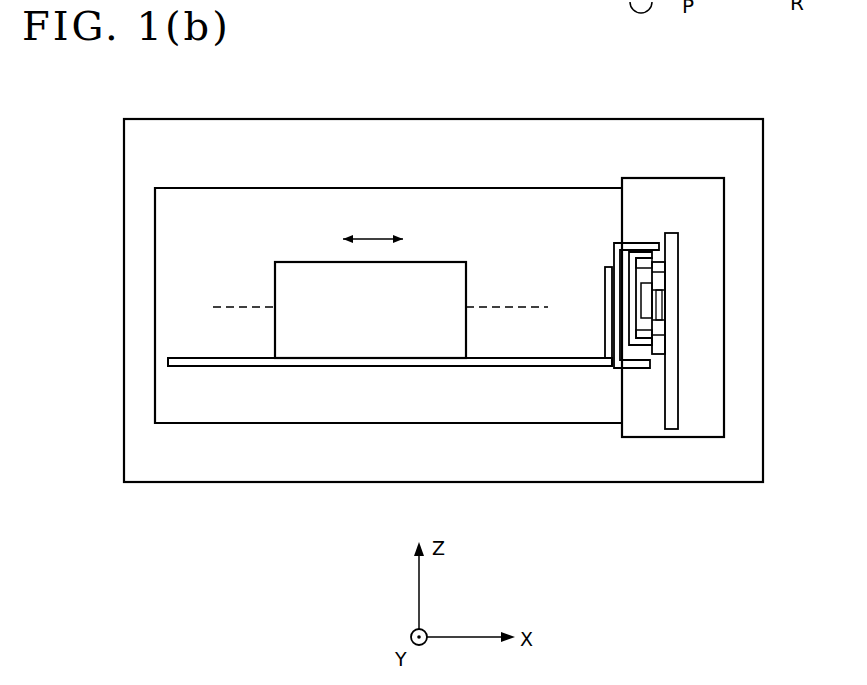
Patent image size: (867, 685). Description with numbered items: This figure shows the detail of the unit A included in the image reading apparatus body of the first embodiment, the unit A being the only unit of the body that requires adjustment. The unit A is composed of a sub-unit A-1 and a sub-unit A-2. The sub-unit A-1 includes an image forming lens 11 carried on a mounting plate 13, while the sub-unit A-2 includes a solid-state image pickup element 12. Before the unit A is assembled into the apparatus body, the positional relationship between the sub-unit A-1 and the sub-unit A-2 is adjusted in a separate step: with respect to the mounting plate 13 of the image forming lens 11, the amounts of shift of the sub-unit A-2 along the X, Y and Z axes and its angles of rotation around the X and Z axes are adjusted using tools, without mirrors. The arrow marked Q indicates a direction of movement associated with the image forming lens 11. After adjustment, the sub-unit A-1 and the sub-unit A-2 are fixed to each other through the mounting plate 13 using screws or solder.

The unit A is at (275, 119).
The sub-unit A-1 is at (411, 188).
The sub-unit A-2 is at (673, 178).
The image forming lens 11 is at (308, 262).
The solid-state image pickup element 12 is at (663, 308).
The mounting plate 13 is at (232, 366).
The movement direction Q is at (375, 239).